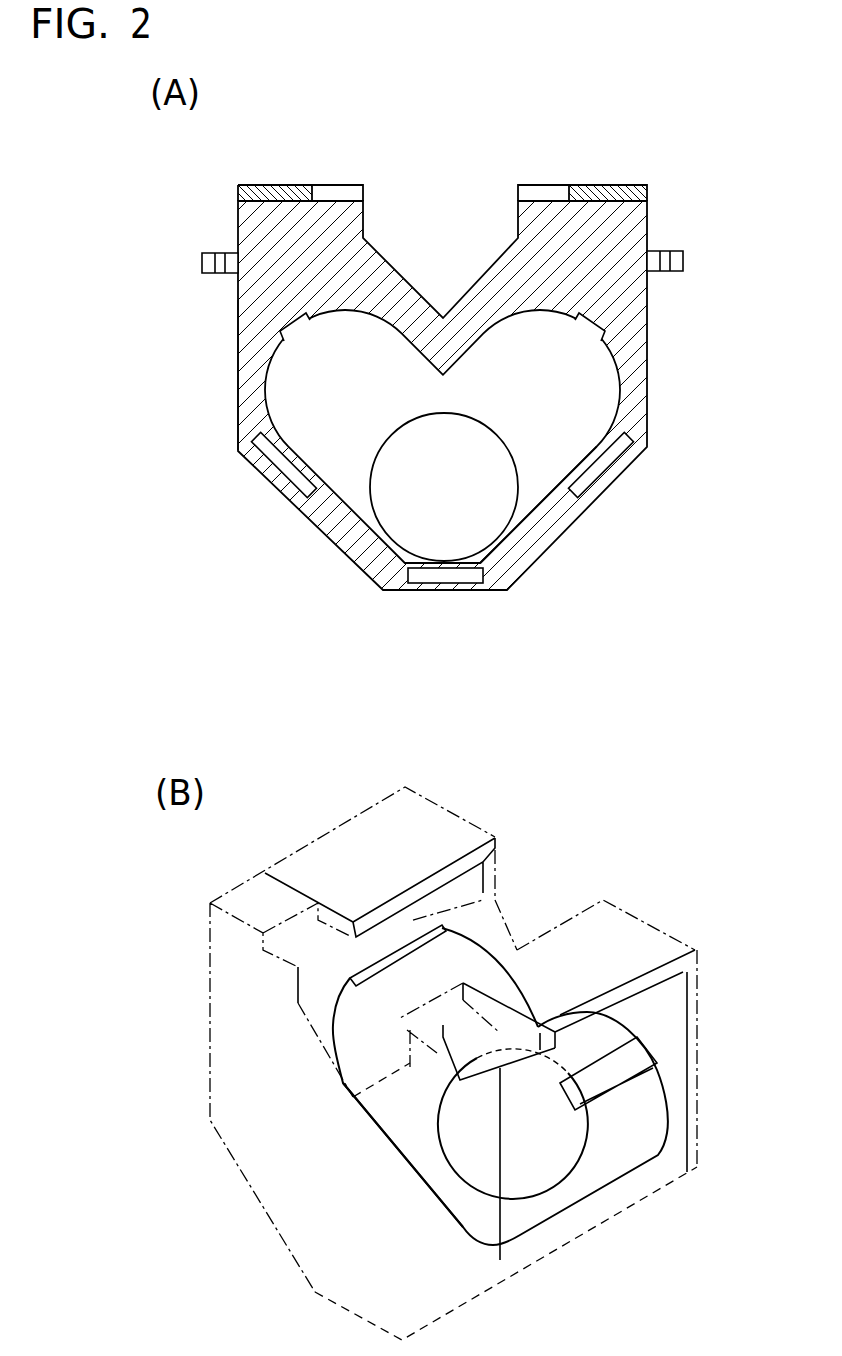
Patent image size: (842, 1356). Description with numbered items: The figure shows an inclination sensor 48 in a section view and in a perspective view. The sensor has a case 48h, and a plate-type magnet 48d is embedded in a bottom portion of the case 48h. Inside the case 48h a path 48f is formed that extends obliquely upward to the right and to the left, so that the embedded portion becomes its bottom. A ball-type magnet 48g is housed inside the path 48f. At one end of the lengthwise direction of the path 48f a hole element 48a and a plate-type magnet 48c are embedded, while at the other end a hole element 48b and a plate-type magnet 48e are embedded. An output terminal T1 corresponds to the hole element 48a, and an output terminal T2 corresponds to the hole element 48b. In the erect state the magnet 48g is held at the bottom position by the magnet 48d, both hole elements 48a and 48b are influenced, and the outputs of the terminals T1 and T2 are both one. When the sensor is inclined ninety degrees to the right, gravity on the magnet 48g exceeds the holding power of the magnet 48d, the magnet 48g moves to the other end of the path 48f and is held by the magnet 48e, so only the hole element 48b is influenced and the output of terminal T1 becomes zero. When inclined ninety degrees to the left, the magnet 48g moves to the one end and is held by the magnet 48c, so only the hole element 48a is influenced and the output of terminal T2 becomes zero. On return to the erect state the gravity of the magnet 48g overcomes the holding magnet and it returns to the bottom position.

The inclination sensor 48 is at (352, 151).
The output terminal T1 is at (205, 251).
The output terminal T2 is at (683, 251).
The hole element 48a is at (285, 333).
The hole element 48b is at (605, 323).
The plate-type magnet 48c is at (282, 462).
The plate-type magnet 48d is at (443, 580).
The plate-type magnet 48e is at (600, 468).
The path 48f is at (526, 509).
The ball-type magnet 48g is at (387, 515).
The case 48h is at (262, 394).